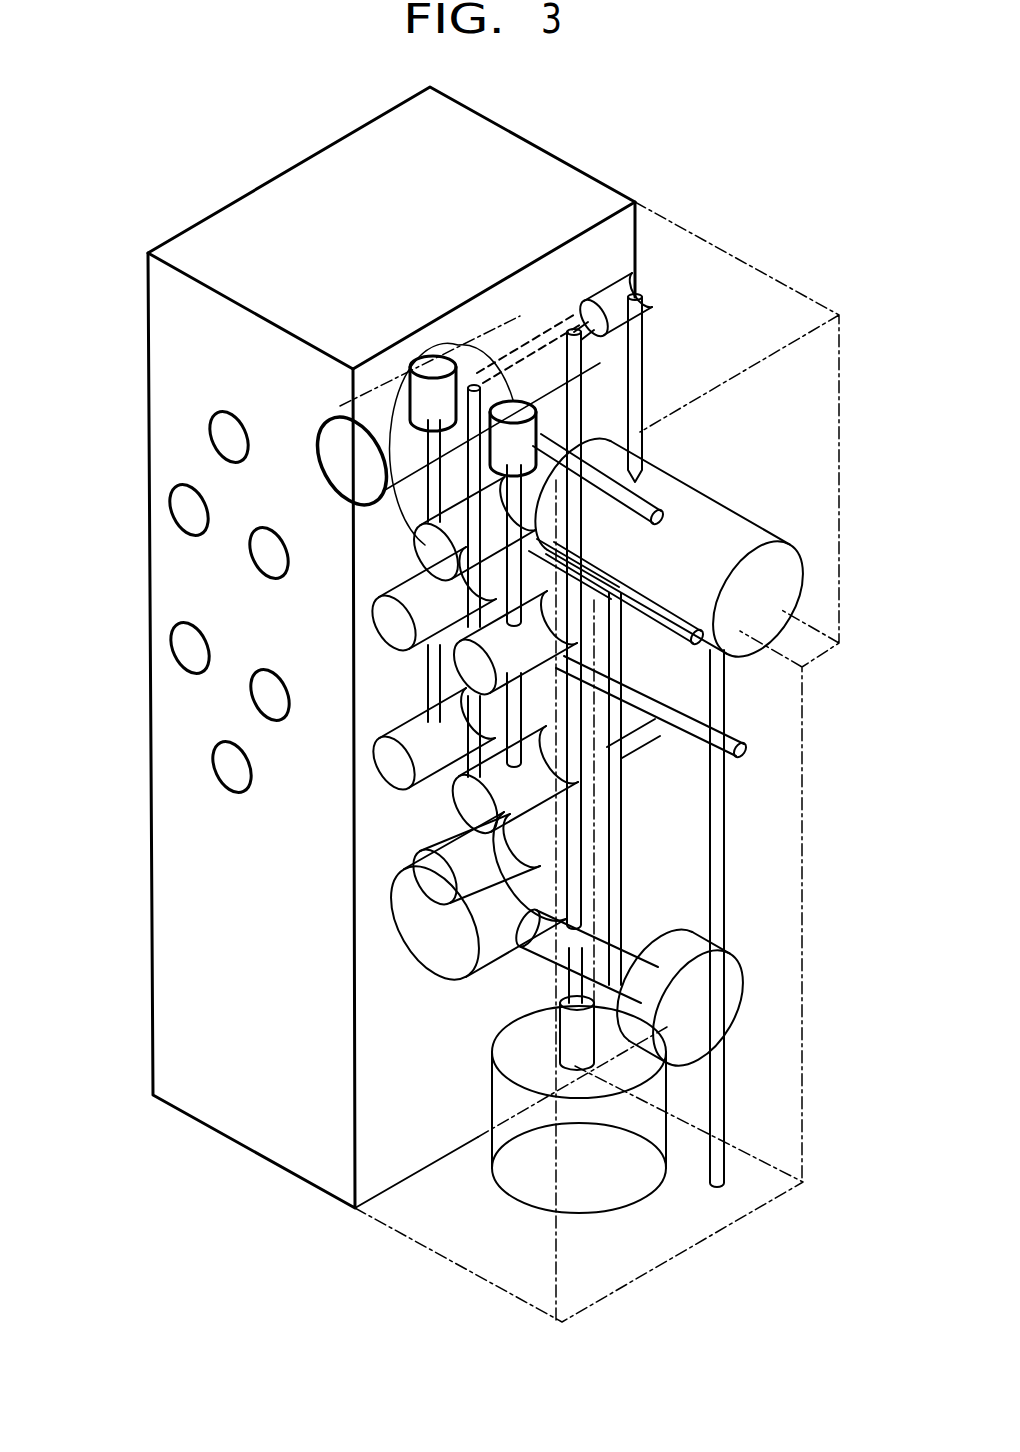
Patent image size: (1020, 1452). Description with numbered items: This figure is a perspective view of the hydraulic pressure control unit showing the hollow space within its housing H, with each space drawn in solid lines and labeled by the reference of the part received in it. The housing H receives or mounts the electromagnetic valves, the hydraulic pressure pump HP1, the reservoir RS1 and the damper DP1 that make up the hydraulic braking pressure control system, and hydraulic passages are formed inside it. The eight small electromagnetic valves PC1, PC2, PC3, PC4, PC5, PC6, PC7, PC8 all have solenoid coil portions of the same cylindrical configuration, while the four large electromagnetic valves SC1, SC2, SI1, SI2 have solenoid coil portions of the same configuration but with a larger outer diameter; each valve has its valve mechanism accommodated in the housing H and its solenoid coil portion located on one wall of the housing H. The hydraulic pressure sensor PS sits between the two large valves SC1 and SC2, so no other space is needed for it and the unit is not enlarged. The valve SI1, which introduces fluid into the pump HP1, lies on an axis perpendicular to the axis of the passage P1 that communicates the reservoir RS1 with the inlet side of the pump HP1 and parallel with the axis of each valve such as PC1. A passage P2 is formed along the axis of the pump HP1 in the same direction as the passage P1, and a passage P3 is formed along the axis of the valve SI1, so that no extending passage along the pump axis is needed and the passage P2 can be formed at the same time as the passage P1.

The housing H is at (573, 187).
The electromagnetic valve SC1 is at (401, 430).
The electromagnetic valve SC2 is at (225, 430).
The hydraulic pressure sensor PS is at (342, 437).
The electromagnetic valve PC1 is at (492, 672).
The electromagnetic valve PC2 is at (392, 620).
The electromagnetic valve PC3 is at (270, 556).
The electromagnetic valve PC4 is at (182, 503).
The electromagnetic valve PC5 is at (518, 792).
The electromagnetic valve PC6 is at (392, 760).
The electromagnetic valve PC7 is at (265, 695).
The electromagnetic valve PC8 is at (185, 648).
The electromagnetic valve SI1 is at (433, 880).
The electromagnetic valve SI2 is at (228, 764).
The damper DP1 is at (713, 537).
The hydraulic pressure pump HP1 is at (720, 976).
The reservoir RS1 is at (622, 1185).
The passage P1 is at (577, 995).
The passage P2 is at (577, 877).
The passage P3 is at (565, 806).